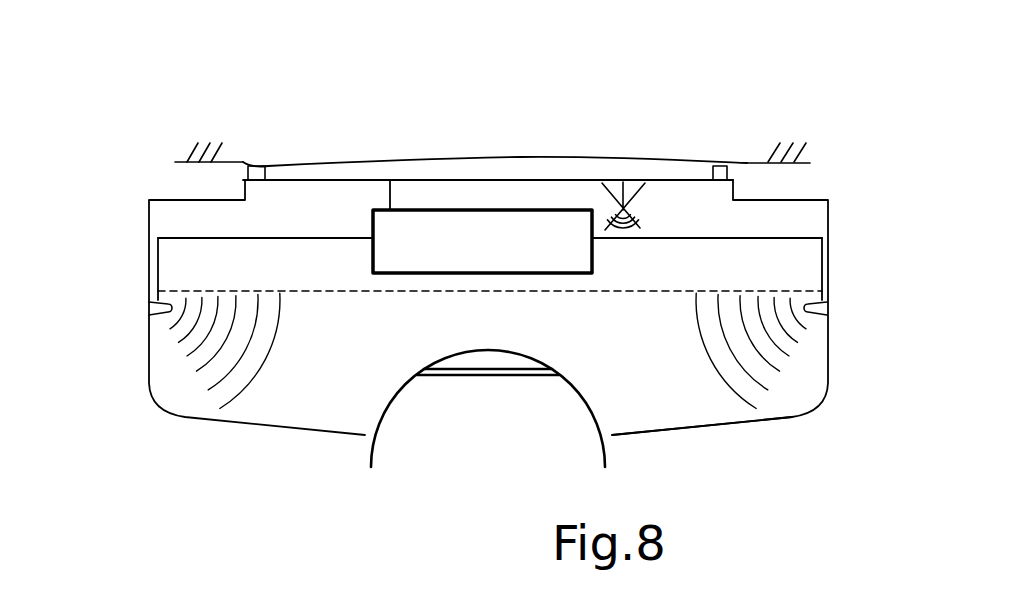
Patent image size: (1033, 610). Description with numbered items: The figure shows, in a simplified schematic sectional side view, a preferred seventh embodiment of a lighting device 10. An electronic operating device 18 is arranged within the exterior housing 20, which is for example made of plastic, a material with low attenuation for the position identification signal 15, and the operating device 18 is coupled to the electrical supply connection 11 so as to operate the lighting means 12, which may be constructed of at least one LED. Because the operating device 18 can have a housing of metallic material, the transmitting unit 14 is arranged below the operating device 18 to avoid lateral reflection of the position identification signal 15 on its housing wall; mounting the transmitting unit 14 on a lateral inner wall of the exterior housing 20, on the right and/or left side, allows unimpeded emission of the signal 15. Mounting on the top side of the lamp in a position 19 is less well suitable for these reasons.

The lighting device 10 is at (295, 108).
The electrical supply connection 11 is at (390, 180).
The lighting means 12 is at (483, 375).
The transmitting unit 14 is at (170, 308).
The position identification signal 15 is at (212, 370).
The electronic operating device 18 is at (483, 225).
The position 19 is at (623, 210).
The exterior housing 20 is at (697, 430).